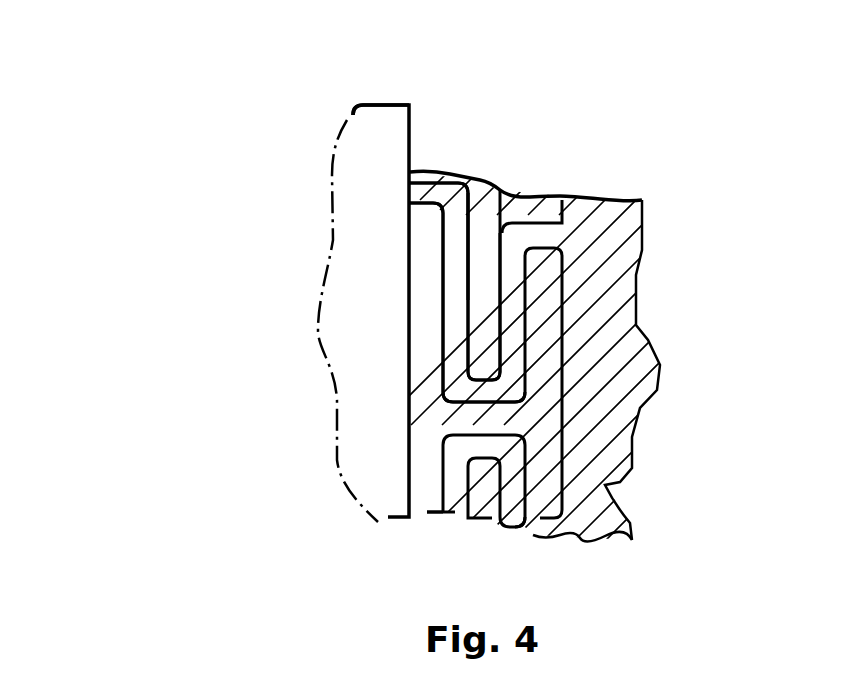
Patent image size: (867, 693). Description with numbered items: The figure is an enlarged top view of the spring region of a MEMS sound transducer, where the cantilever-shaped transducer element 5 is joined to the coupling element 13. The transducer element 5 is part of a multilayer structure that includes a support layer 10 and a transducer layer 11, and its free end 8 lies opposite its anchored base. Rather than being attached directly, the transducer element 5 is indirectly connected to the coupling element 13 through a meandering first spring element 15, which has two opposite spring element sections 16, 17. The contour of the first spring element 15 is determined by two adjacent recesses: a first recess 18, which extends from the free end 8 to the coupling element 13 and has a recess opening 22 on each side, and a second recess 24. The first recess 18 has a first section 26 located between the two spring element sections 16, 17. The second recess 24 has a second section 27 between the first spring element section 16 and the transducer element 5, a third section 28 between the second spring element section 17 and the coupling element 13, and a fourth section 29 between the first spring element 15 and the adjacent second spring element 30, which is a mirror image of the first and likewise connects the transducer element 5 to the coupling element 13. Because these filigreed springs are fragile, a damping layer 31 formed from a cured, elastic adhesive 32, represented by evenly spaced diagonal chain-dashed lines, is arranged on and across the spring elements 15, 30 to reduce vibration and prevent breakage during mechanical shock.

The transducer element 5 is at (336, 114).
The free end 8 is at (412, 148).
The support layer 10 is at (447, 508).
The transducer layer 11 is at (363, 195).
The coupling element 13 is at (623, 332).
The first spring element 15 is at (462, 392).
The first spring element section 16 is at (455, 280).
The second spring element section 17 is at (505, 330).
The first recess 18 is at (482, 243).
The recess opening 22 is at (430, 318).
The second recess 24 is at (422, 348).
The first section 26 is at (483, 303).
The second section 27 is at (423, 292).
The third section 28 is at (545, 300).
The fourth section 29 is at (485, 413).
The second spring element 30 is at (453, 482).
The damping layer 31 is at (548, 518).
The adhesive 32 is at (545, 490).